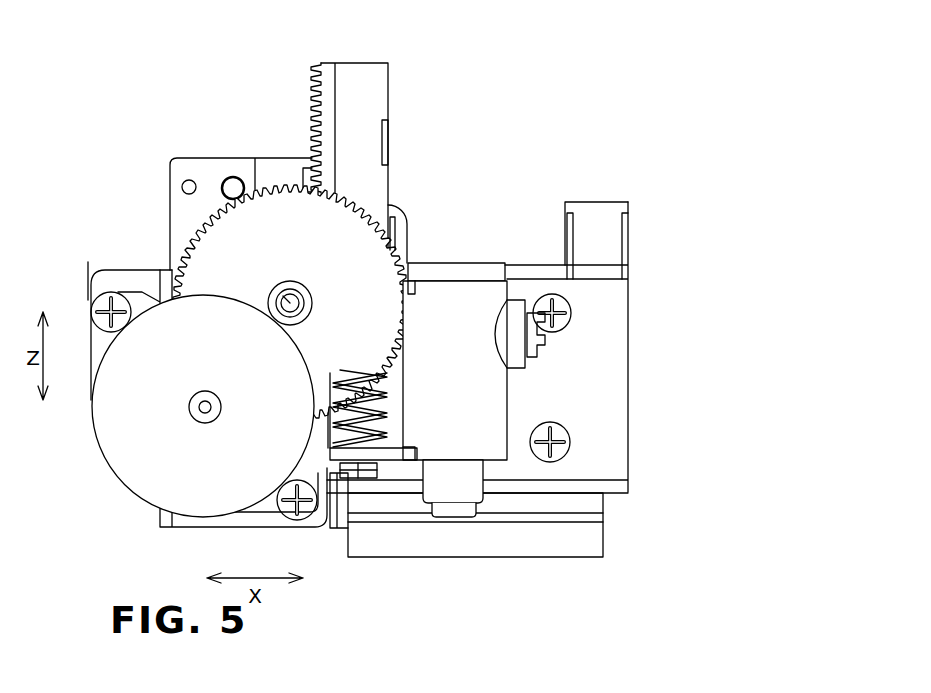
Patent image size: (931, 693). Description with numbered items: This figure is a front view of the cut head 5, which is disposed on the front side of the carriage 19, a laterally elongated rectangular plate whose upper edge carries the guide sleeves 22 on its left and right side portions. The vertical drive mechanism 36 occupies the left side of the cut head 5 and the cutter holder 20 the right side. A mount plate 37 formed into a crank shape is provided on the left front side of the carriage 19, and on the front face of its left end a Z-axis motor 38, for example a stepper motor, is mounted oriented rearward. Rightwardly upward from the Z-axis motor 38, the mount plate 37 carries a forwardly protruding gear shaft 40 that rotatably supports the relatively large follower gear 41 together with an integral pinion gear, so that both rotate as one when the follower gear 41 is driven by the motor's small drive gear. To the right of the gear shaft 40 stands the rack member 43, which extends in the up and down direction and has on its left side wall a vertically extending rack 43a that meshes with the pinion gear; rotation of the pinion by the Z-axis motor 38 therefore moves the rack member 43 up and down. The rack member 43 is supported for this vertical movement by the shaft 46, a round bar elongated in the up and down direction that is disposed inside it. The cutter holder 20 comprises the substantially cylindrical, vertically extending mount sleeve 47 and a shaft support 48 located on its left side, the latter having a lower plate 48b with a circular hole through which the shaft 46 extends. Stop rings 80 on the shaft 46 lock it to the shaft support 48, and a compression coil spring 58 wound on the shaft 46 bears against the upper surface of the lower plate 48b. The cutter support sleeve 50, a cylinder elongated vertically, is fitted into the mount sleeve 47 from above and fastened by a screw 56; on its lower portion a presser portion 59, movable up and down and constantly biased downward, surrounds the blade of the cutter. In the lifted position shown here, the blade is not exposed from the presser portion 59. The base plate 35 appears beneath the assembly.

The cut head 5 is at (147, 145).
The carriage 19 is at (620, 393).
The cutter holder 20 is at (523, 420).
The guide sleeves 22 is at (592, 210).
The base plate 35 is at (600, 538).
The vertical drive mechanism 36 is at (280, 152).
The mount plate 37 is at (117, 270).
The Z-axis motor 38 is at (135, 470).
The gear shaft 40 is at (305, 300).
The follower gear 41 is at (200, 238).
The rack member 43 is at (354, 65).
The rack 43a is at (312, 118).
The shaft 46 is at (365, 443).
The mount sleeve 47 is at (497, 393).
The shaft support 48 is at (407, 228).
The lower plate 48b is at (338, 497).
The cutter support sleeve 50 is at (478, 262).
The screw 56 is at (546, 345).
The compression coil spring 58 is at (388, 385).
The presser portion 59 is at (480, 484).
The stop rings 80 is at (387, 446).